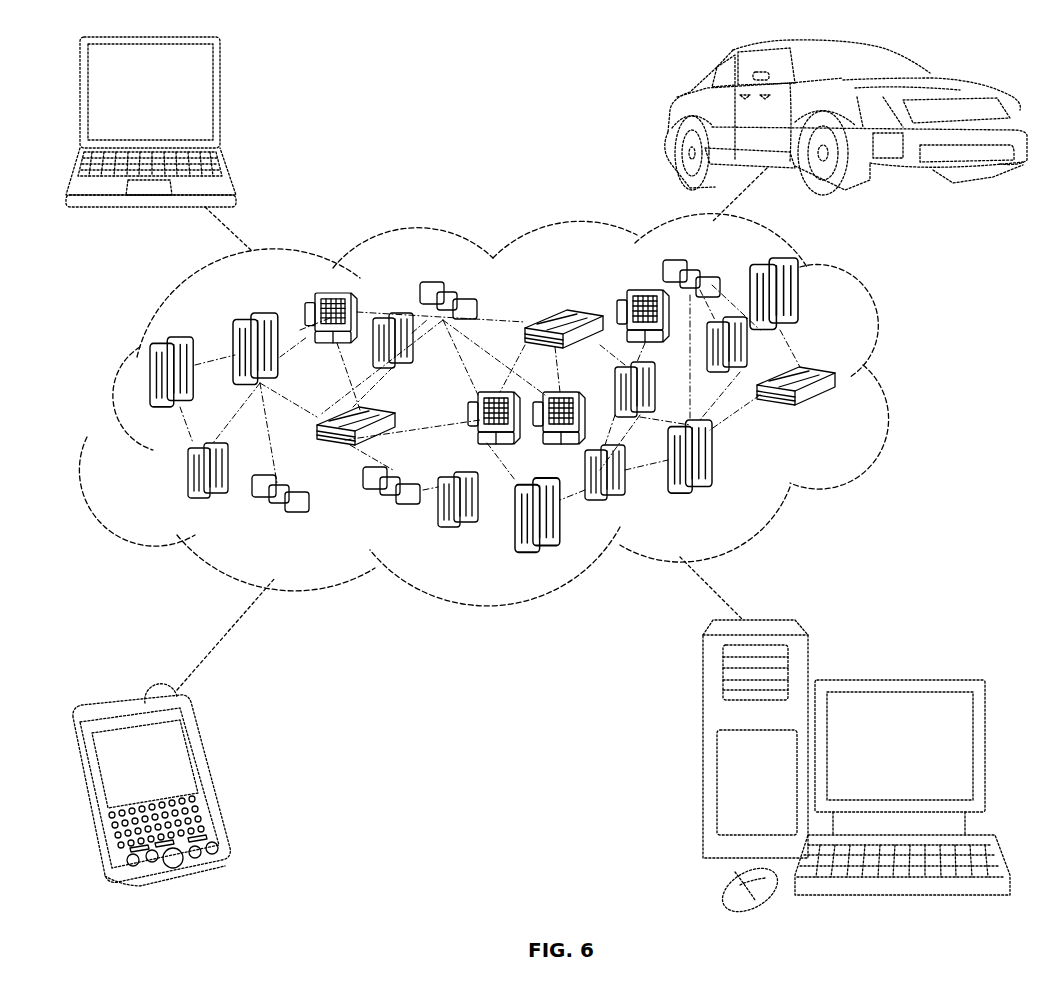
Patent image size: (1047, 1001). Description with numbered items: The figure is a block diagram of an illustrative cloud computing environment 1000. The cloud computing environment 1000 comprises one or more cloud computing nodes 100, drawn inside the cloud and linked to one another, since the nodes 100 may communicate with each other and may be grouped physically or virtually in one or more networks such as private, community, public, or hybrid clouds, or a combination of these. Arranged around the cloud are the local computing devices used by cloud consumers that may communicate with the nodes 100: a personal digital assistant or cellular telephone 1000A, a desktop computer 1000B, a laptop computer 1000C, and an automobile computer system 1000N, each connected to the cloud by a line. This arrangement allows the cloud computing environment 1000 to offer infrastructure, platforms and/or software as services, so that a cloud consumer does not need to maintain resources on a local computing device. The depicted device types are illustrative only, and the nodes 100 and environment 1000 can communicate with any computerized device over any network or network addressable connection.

The cloud computing nodes 100 is at (838, 413).
The cloud computing environment 1000 is at (898, 383).
The personal digital assistant (PDA) or cellular telephone 1000A is at (210, 778).
The desktop computer 1000B is at (895, 680).
The laptop computer 1000C is at (222, 100).
The automobile computer system 1000N is at (672, 118).